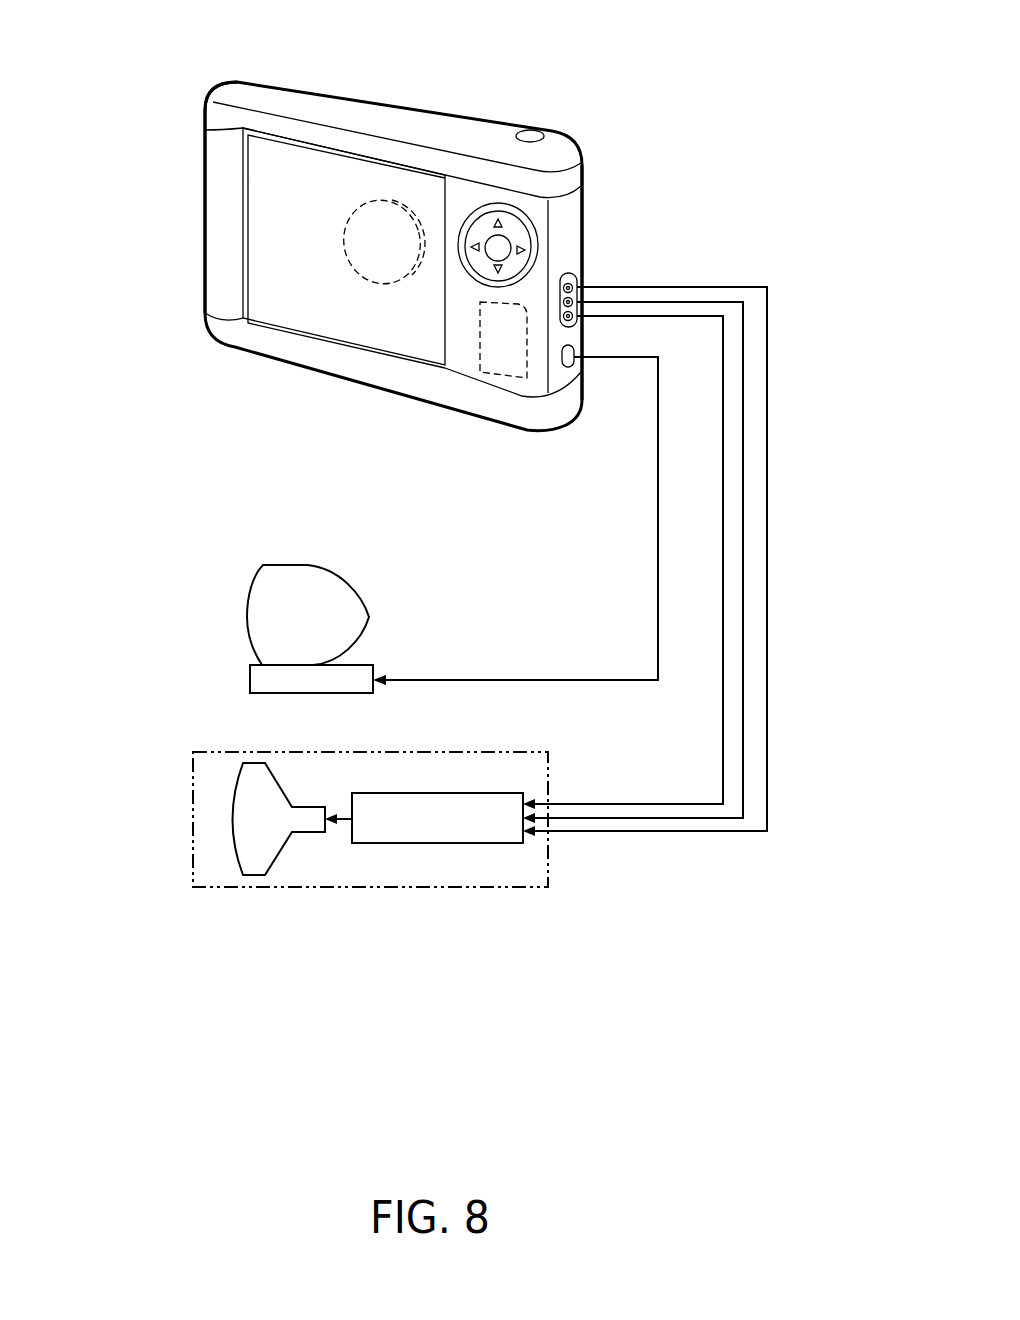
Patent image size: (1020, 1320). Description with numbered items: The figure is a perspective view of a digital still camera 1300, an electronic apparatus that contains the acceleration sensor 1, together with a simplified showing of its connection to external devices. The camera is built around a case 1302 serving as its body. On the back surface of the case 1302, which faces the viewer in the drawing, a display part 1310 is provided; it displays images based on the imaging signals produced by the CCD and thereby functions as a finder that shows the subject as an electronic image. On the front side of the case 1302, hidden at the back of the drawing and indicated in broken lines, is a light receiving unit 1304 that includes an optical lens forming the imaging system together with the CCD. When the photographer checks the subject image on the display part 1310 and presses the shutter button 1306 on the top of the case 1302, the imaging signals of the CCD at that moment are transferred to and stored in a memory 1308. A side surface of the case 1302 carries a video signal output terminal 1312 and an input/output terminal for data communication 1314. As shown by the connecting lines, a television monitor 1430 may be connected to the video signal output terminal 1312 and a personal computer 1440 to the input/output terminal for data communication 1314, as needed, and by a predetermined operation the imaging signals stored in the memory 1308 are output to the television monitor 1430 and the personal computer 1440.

The acceleration sensor 1 is at (462, 355).
The digital still camera 1300 is at (503, 69).
The case 1302 is at (222, 118).
The light receiving unit 1304 is at (387, 185).
The shutter button 1306 is at (533, 132).
The memory 1308 is at (500, 367).
The display part 1310 is at (320, 315).
The video signal output terminal 1312 is at (572, 273).
The input/output terminal for data communication 1314 is at (573, 364).
The television monitor 1430 is at (190, 818).
The personal computer 1440 is at (248, 600).